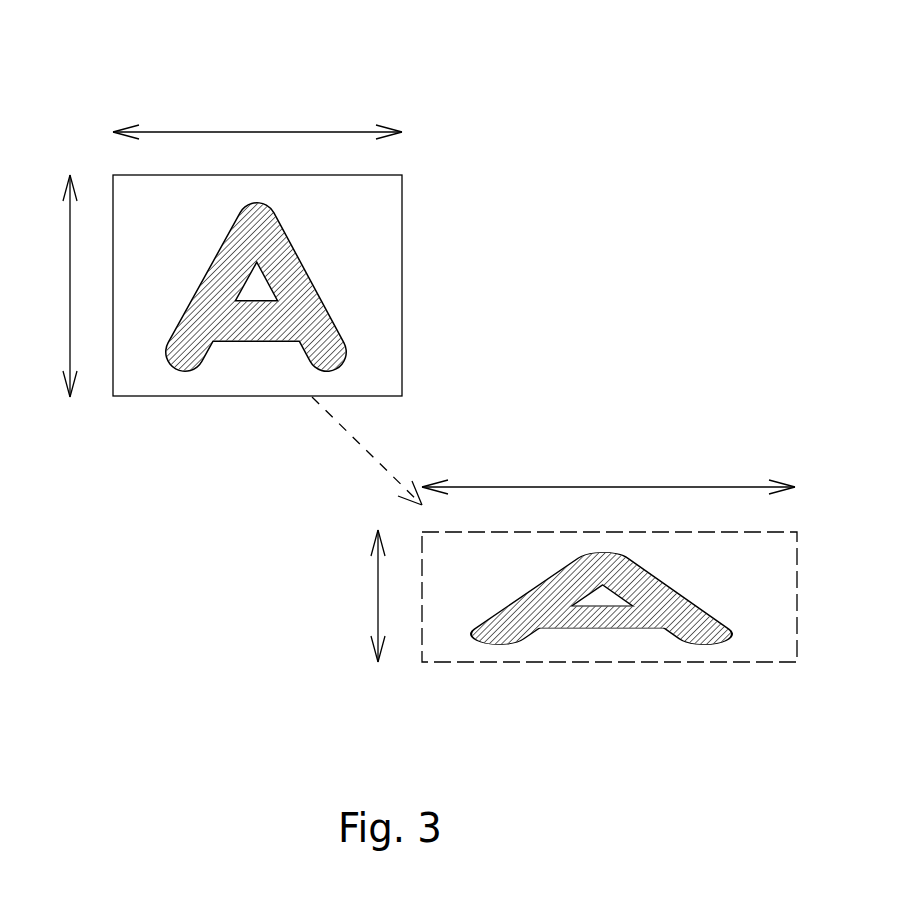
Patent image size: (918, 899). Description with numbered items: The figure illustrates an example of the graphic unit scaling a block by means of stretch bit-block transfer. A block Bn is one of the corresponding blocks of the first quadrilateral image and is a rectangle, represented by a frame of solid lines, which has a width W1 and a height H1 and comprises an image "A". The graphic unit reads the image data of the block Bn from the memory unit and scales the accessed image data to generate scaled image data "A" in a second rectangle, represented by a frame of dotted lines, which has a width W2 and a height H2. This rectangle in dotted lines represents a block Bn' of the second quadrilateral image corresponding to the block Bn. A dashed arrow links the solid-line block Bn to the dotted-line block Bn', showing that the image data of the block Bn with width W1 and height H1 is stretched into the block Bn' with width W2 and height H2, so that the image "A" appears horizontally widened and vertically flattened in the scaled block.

The block Bn is at (290, 202).
The block Bn' is at (619, 501).
The width W1 is at (257, 120).
The height H1 is at (52, 286).
The width W2 is at (608, 474).
The height H2 is at (360, 596).